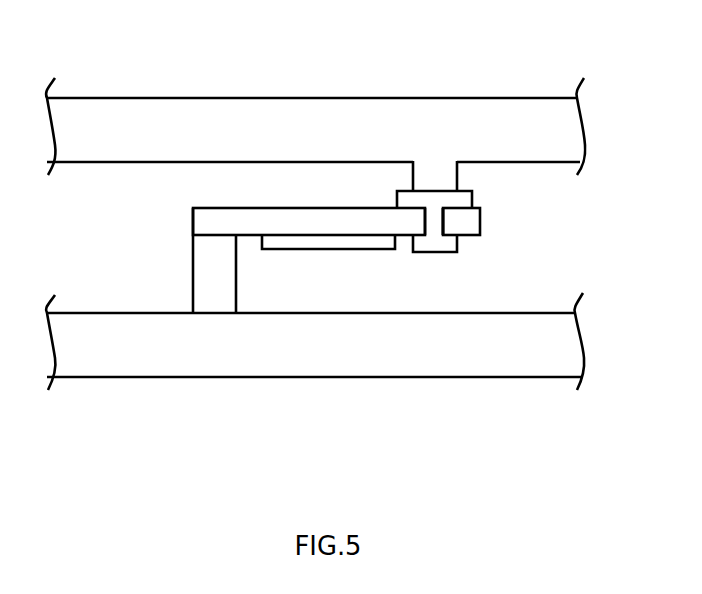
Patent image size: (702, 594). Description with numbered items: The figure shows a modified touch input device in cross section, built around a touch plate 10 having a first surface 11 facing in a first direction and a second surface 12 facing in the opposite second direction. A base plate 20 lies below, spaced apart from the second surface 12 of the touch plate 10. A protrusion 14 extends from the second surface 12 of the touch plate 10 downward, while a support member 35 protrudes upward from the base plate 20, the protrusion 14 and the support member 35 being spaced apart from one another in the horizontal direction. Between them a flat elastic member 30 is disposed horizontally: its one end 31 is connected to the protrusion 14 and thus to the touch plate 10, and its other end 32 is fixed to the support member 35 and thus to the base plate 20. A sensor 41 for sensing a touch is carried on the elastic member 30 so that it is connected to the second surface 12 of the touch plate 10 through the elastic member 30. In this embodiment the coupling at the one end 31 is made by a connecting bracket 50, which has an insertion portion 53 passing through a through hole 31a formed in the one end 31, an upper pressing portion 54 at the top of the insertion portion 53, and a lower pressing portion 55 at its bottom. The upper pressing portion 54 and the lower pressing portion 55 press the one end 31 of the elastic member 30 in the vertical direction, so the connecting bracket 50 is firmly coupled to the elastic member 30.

The touch plate 10 is at (356, 106).
The first surface 11 is at (518, 98).
The second surface 12 is at (86, 163).
The protrusion 14 is at (457, 176).
The base plate 20 is at (340, 378).
The elastic member 30 is at (297, 213).
The one end of the elastic member 31 is at (480, 222).
The through hole 31a is at (441, 220).
The other end of the elastic member 32 is at (197, 222).
The support member 35 is at (197, 265).
The sensor 41 is at (327, 240).
The connecting bracket 50 is at (491, 245).
The insertion portion 53 is at (435, 225).
The upper pressing portion 54 is at (472, 198).
The lower pressing portion 55 is at (457, 245).